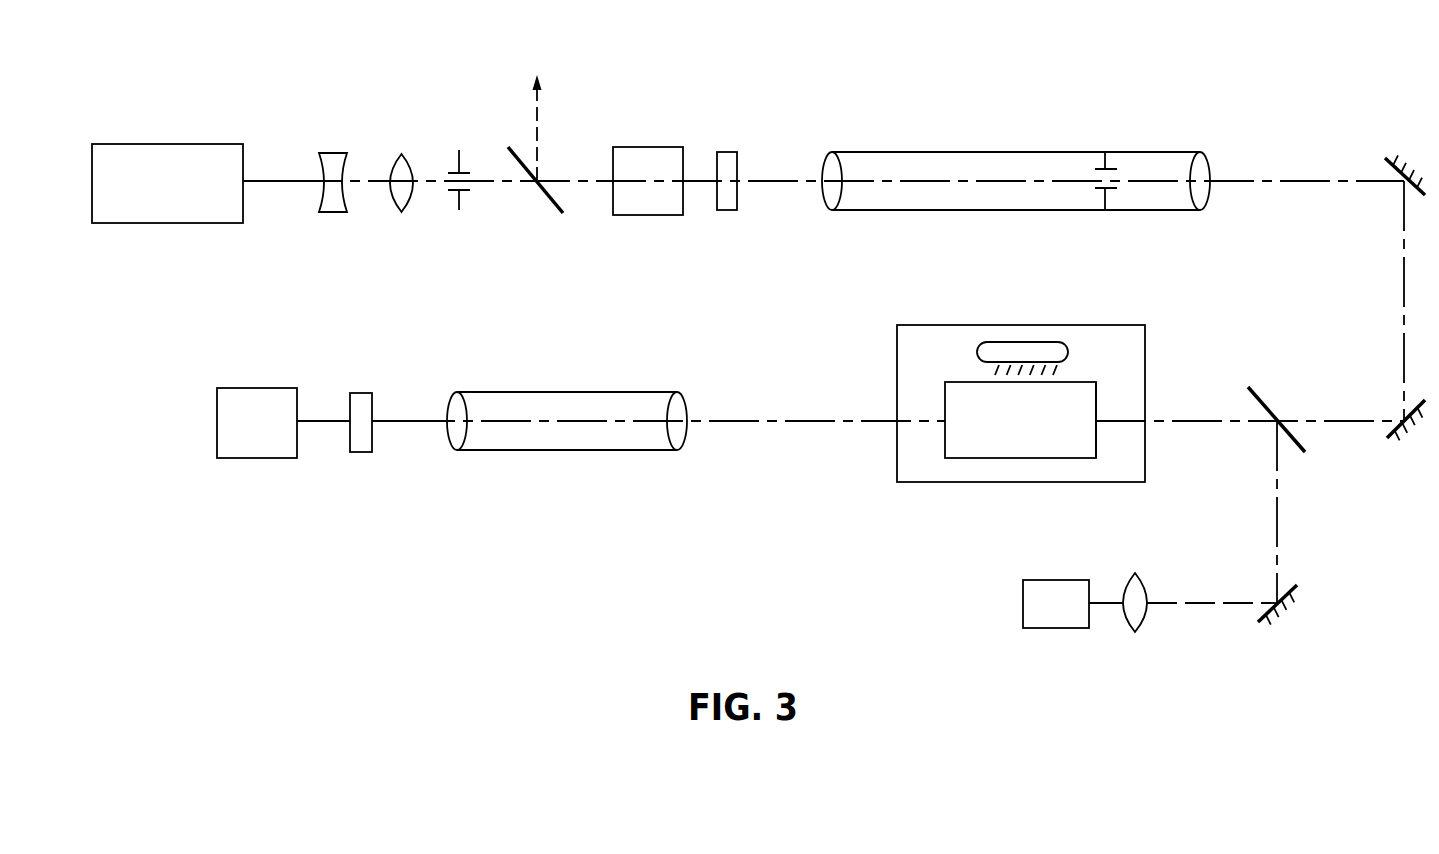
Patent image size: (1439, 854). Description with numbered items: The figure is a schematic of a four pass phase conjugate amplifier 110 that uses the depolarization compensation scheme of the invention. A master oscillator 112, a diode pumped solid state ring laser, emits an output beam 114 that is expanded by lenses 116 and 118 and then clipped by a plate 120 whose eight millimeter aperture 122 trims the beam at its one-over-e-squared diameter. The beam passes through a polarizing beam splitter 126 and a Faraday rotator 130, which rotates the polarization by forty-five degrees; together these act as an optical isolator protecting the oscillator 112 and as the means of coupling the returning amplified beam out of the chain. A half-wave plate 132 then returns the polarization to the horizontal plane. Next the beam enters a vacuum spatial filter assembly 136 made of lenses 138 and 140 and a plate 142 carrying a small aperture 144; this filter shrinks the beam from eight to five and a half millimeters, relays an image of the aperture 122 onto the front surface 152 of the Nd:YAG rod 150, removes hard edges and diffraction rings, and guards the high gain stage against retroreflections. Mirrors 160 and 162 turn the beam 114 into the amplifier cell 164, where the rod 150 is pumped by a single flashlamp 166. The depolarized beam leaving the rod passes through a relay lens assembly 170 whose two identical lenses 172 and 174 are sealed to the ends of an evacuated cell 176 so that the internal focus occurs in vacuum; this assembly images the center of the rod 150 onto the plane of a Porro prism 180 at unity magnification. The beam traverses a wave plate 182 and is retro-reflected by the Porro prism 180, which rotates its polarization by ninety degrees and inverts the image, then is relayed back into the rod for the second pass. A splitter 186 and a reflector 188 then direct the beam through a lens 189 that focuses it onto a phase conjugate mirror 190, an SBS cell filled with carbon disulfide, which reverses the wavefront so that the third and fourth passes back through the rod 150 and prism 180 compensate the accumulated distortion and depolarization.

The amplifier 110 is at (879, 73).
The master oscillator 112 is at (172, 223).
The output beam 114 is at (280, 182).
The lens 116 is at (332, 153).
The lens 118 is at (397, 157).
The plate 120 is at (460, 202).
The aperture 122 is at (448, 173).
The polarizing beam splitter 126 is at (550, 200).
The Faraday rotator 130 is at (648, 147).
The half-wave plate 132 is at (728, 152).
The vacuum spatial filter assembly 136 is at (1019, 178).
The lens 138 is at (822, 198).
The lens 140 is at (1208, 188).
The plate 142 is at (1107, 162).
The aperture 144 is at (1115, 183).
The Nd:YAG rod 150 is at (1109, 382).
The front surface 152 is at (1097, 407).
The mirror 160 is at (1387, 160).
The mirror 162 is at (1390, 435).
The amplifier cell 164 is at (1052, 379).
The flashlamp 166 is at (978, 348).
The relay lens assembly 170 is at (595, 416).
The lens 172 is at (683, 433).
The lens 174 is at (455, 443).
The cell 176 is at (512, 378).
The Porro prism 180 is at (258, 457).
The wave plate 182 is at (360, 452).
The splitter 186 is at (1257, 392).
The reflector 188 is at (1260, 618).
The lens 189 is at (1147, 582).
The phase conjugate mirror 190 is at (1090, 628).